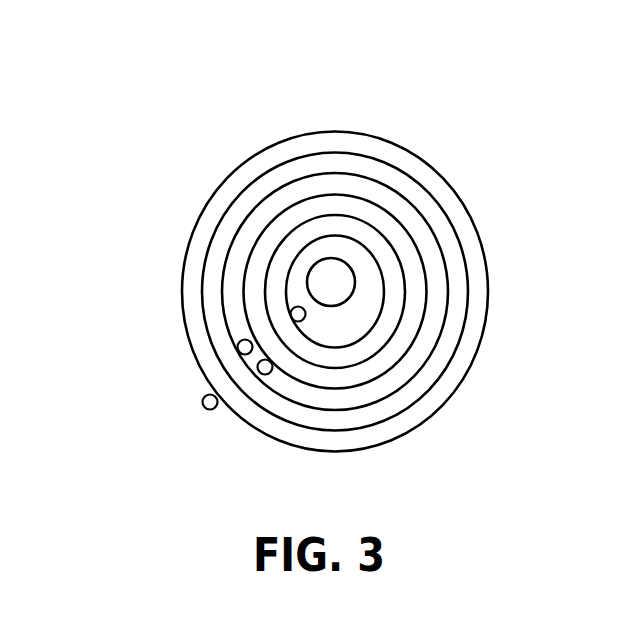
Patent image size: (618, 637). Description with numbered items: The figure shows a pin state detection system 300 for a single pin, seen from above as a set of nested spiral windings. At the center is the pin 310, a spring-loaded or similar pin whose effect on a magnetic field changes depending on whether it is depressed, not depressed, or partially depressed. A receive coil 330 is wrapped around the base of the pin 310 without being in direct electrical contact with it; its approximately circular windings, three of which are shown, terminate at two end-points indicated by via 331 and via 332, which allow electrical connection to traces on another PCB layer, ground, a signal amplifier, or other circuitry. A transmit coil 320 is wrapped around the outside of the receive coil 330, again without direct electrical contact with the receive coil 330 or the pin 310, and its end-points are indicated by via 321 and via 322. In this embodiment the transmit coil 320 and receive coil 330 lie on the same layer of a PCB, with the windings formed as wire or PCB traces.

The pin state detection system 300 is at (127, 88).
The pin 310 is at (343, 258).
The transmit coil 320 is at (350, 132).
The via 321 is at (203, 398).
The via 322 is at (237, 343).
The receive coil 330 is at (385, 285).
The via 331 is at (305, 316).
The via 332 is at (272, 368).